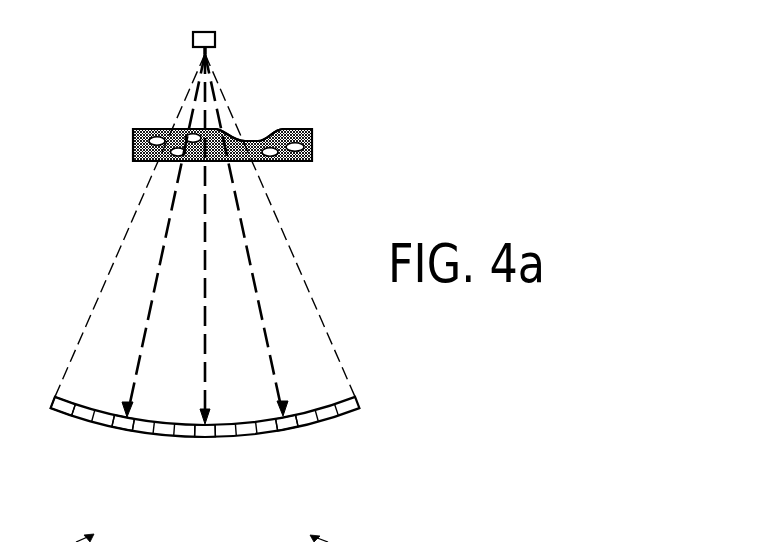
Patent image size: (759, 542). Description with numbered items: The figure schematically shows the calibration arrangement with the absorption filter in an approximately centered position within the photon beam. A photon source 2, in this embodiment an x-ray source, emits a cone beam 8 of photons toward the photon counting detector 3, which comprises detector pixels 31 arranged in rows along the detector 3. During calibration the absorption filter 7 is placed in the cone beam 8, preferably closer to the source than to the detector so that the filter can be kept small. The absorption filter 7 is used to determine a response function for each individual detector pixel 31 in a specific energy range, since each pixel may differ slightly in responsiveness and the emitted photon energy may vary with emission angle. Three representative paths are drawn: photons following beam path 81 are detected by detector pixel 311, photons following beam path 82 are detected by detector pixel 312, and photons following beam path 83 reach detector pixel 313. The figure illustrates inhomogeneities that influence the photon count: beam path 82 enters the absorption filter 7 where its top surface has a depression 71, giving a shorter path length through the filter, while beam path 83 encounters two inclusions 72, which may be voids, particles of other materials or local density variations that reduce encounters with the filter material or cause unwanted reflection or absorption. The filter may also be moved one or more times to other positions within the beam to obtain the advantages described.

The photon source 2 is at (216, 39).
The absorption filter 7 is at (249, 111).
The depression 71 is at (254, 140).
The inclusions 72 is at (190, 134).
The cone beam 8 is at (140, 267).
The beam path 81 is at (205, 355).
The beam path 82 is at (272, 355).
The beam path 83 is at (142, 355).
The photon counting detector 3 is at (223, 451).
The detector pixels 31 is at (58, 409).
The detector pixel 311 is at (204, 437).
The detector pixel 312 is at (287, 427).
The detector pixel 313 is at (122, 430).